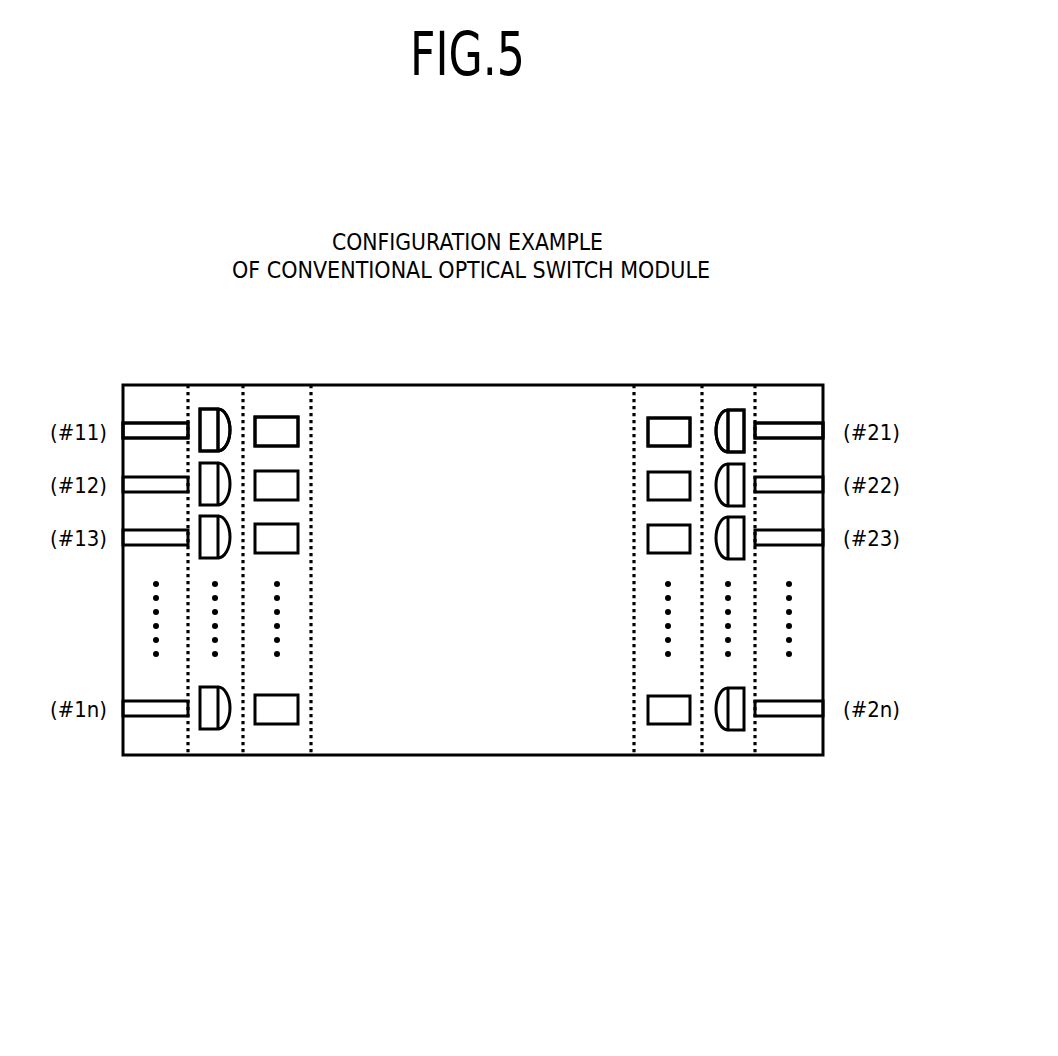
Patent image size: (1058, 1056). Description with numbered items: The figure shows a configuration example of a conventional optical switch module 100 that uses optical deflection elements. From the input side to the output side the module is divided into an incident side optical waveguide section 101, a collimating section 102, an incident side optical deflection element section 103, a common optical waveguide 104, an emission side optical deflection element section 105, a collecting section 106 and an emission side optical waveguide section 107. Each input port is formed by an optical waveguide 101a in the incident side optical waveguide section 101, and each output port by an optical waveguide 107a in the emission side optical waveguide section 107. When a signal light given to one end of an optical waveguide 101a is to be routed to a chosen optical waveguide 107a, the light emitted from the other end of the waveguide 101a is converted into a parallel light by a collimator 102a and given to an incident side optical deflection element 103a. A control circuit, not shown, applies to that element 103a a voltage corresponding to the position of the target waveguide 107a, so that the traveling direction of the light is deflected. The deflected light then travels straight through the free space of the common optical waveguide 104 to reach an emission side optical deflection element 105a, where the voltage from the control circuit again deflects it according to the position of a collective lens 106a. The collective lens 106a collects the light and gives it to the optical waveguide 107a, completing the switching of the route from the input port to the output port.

The optical switch module 100 is at (570, 837).
The incident side optical waveguide section 101 is at (188, 765).
The optical waveguide 101a is at (141, 412).
The collimating section 102 is at (243, 765).
The collimator 102a is at (205, 396).
The incident side optical deflection element section 103 is at (311, 765).
The incident side optical deflection element 103a is at (269, 400).
The common optical waveguide 104 is at (634, 765).
The emission side optical deflection element section 105 is at (702, 765).
The emission side optical deflection element 105a is at (671, 403).
The collecting section 106 is at (755, 765).
The collective lens 106a is at (731, 396).
The emission side optical waveguide section 107 is at (823, 765).
The optical waveguide 107a is at (799, 412).